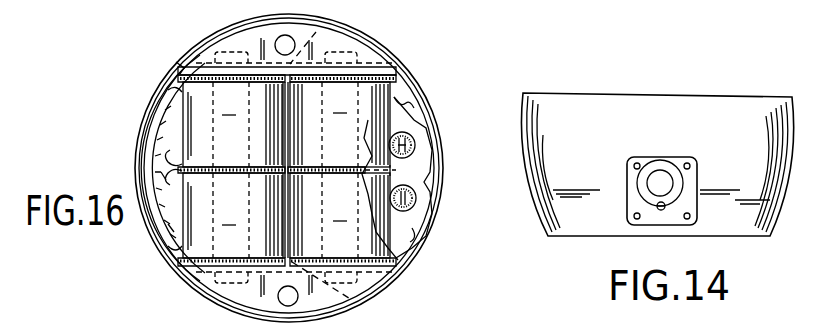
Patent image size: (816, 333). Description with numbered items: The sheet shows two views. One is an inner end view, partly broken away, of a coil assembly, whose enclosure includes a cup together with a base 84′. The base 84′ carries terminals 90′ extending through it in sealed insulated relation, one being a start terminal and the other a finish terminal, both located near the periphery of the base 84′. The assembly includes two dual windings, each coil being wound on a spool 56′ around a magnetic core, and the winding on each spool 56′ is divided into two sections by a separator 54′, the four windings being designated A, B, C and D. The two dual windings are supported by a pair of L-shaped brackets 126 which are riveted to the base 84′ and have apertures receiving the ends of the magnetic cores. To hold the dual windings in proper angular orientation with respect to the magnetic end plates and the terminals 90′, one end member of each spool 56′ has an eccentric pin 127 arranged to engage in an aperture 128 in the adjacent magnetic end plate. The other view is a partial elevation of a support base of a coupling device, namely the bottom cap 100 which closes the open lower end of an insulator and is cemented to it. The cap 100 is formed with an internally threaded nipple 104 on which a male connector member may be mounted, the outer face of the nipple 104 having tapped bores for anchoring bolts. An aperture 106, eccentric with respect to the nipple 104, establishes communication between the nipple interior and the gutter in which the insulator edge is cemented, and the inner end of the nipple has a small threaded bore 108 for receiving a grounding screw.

In FIG. 16, the spool 56′ is at (182, 73).
In FIG. 16, the separator 54′ is at (235, 163).
In FIG. 16, the eccentric pin 127 is at (318, 262).
In FIG. 16, the aperture 128 is at (318, 38).
In FIG. 16, the base 84′ is at (422, 179).
In FIG. 16, the terminals 90′ is at (413, 148).
In FIG. 16, the L-shaped brackets 126 is at (269, 327).
In FIG. 14, the bottom cap 100 is at (544, 100).
In FIG. 14, the internally threaded nipple 104 is at (649, 160).
In FIG. 14, the aperture 106 is at (665, 178).
In FIG. 14, the threaded bore 108 is at (658, 209).